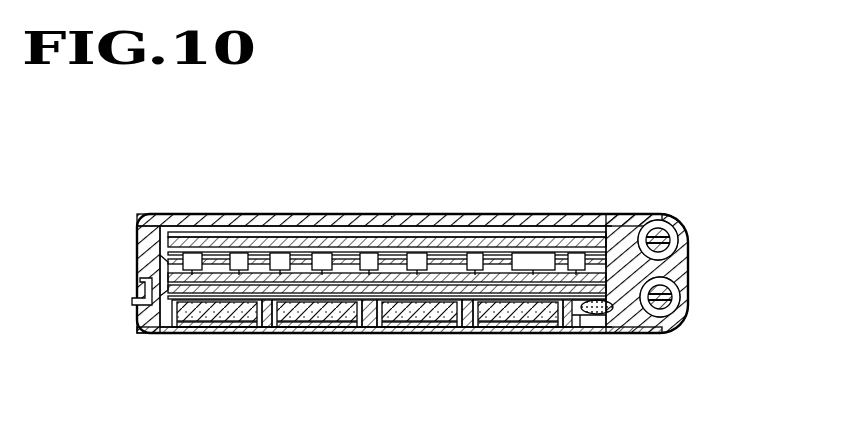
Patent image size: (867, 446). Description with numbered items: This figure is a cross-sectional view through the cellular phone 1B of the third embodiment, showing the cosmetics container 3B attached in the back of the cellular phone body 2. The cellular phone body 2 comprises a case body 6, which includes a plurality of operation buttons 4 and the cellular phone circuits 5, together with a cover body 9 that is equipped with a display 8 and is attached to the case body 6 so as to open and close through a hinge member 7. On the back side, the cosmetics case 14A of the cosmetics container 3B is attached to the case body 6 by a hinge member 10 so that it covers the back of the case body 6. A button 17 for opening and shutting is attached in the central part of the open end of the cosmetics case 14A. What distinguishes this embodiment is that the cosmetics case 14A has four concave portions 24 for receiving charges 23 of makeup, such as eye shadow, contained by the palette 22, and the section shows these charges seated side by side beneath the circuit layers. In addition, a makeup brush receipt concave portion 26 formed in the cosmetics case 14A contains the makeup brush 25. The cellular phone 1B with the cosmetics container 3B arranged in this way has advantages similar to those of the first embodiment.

The cellular phone 1B is at (625, 157).
The cellular phone body 2 is at (266, 211).
The cosmetics container 3B is at (325, 339).
The operation buttons 4 is at (192, 254).
The cellular phone circuits 5 is at (308, 266).
The case body 6 is at (137, 258).
The hinge member 7 is at (688, 226).
The display 8 is at (338, 246).
The cover body 9 is at (386, 236).
The hinge member 10 is at (691, 302).
The cosmetics case 14A is at (393, 334).
The button 17 is at (134, 301).
The palette 22 is at (211, 330).
The charges of makeup 23 is at (236, 322).
The concave portions 24 is at (176, 334).
The makeup brush 25 is at (622, 318).
The makeup brush receipt concave portion 26 is at (600, 322).